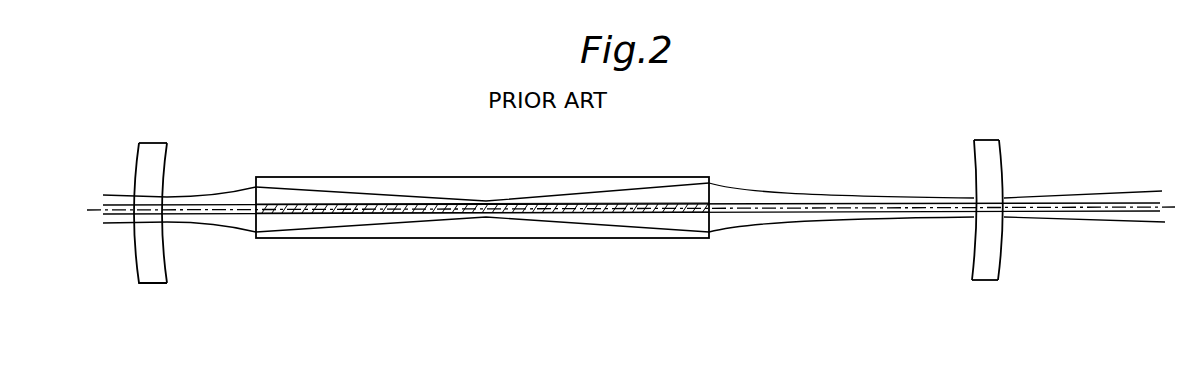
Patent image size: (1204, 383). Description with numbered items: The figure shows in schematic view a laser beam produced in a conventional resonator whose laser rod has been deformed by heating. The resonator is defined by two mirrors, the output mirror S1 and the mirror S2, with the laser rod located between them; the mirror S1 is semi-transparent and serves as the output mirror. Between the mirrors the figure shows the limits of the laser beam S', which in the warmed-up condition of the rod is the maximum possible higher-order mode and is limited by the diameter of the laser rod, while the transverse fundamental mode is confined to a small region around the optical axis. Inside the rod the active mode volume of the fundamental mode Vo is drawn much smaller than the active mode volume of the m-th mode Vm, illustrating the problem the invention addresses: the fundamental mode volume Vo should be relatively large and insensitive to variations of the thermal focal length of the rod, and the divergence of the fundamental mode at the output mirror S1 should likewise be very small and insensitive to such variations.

The output mirror S1 is at (977, 198).
The mirror S2 is at (161, 196).
The laser beam S' is at (634, 178).
The active mode volume of the fundamental mode Vo is at (482, 182).
The active mode volume of the m-th mode Vm is at (402, 202).